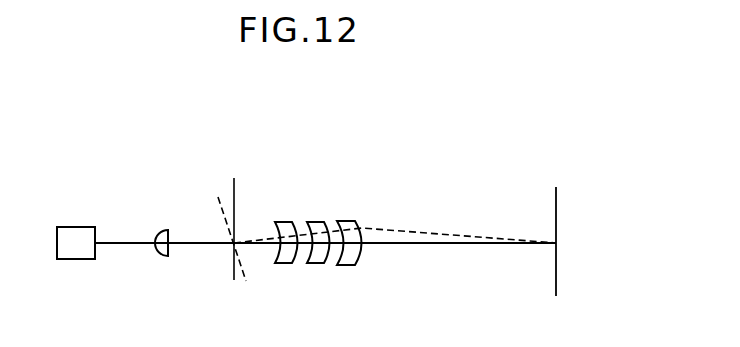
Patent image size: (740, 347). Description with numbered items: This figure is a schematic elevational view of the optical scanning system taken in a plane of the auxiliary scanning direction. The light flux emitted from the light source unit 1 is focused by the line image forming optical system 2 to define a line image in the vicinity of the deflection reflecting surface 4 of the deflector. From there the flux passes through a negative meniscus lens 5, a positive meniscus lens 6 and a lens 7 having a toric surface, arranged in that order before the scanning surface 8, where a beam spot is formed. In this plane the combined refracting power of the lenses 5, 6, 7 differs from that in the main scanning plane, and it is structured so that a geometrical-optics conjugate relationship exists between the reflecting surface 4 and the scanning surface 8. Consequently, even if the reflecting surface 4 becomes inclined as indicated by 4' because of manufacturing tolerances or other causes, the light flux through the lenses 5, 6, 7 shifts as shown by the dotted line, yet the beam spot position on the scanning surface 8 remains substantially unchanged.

The light source unit 1 is at (80, 232).
The line image forming optical system 2 is at (165, 233).
The deflection reflecting surface 4 is at (239, 204).
The inclined reflecting surface 4' is at (225, 204).
The negative meniscus lens 5 is at (287, 217).
The positive meniscus lens 6 is at (319, 217).
The lens having a toric surface 7 is at (347, 217).
The scanning surface 8 is at (556, 196).